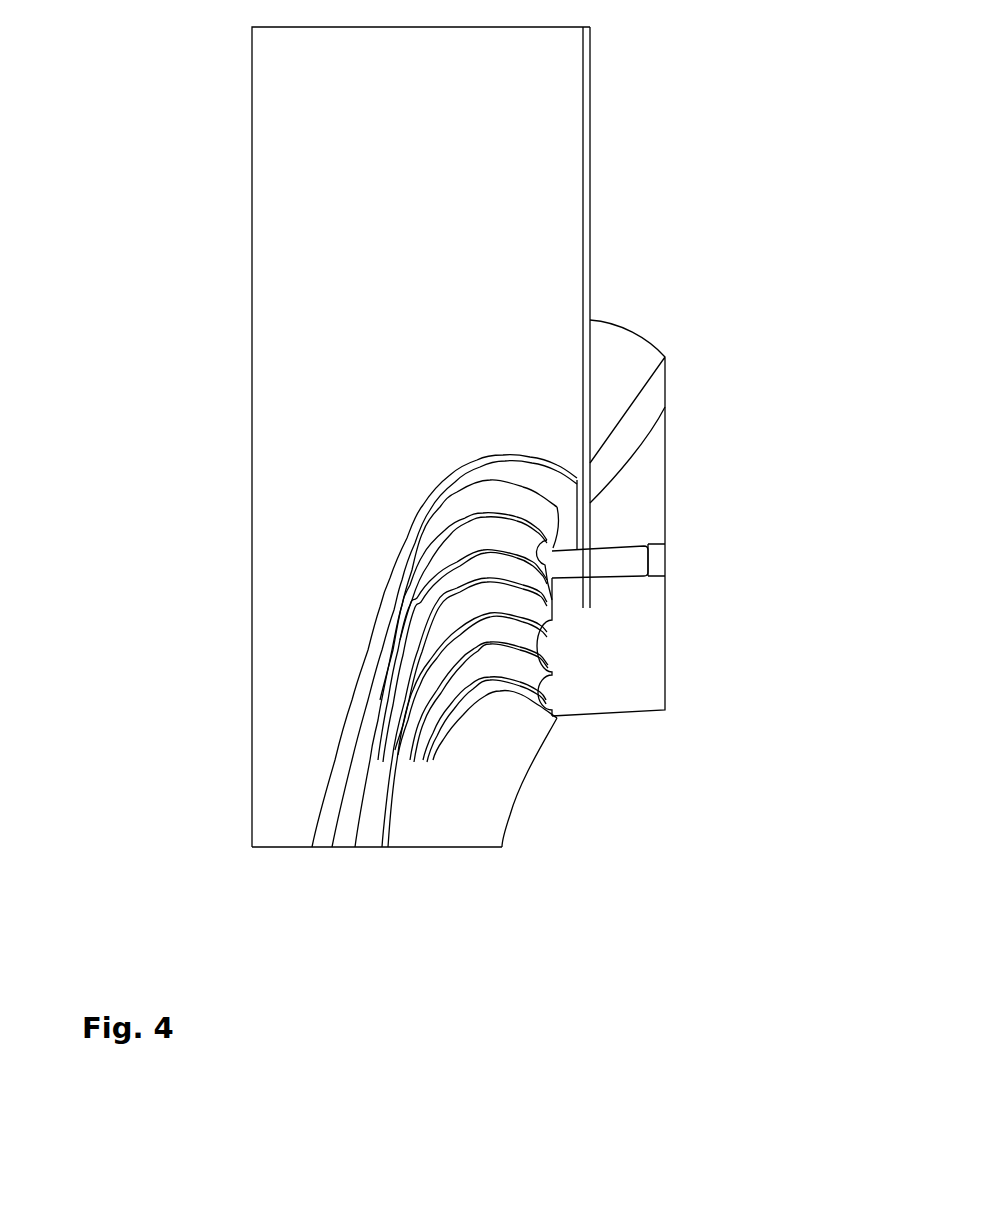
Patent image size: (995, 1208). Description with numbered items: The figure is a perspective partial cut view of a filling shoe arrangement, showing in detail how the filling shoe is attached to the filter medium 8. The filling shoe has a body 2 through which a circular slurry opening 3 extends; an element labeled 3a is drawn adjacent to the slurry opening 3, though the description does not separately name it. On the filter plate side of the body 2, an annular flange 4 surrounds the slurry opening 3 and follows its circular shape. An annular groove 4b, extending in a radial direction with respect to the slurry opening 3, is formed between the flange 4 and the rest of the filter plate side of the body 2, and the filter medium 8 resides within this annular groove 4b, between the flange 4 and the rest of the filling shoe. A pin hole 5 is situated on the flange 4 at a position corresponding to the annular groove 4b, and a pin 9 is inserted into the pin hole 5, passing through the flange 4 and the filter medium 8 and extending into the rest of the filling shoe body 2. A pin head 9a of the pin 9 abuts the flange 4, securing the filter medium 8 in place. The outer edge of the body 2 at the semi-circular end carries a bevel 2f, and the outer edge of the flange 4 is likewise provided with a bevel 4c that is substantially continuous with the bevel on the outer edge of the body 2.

The filter medium 8 is at (281, 440).
The bevel 4c is at (537, 477).
The bevel 2f is at (622, 370).
The annular groove 4b is at (630, 557).
The pin hole 5 is at (665, 566).
The pin 9 is at (662, 565).
The pin head 9a is at (522, 548).
The annular flange 4 is at (398, 643).
The teeth 3a is at (568, 717).
The body 2 is at (645, 690).
The slurry opening 3 is at (502, 813).